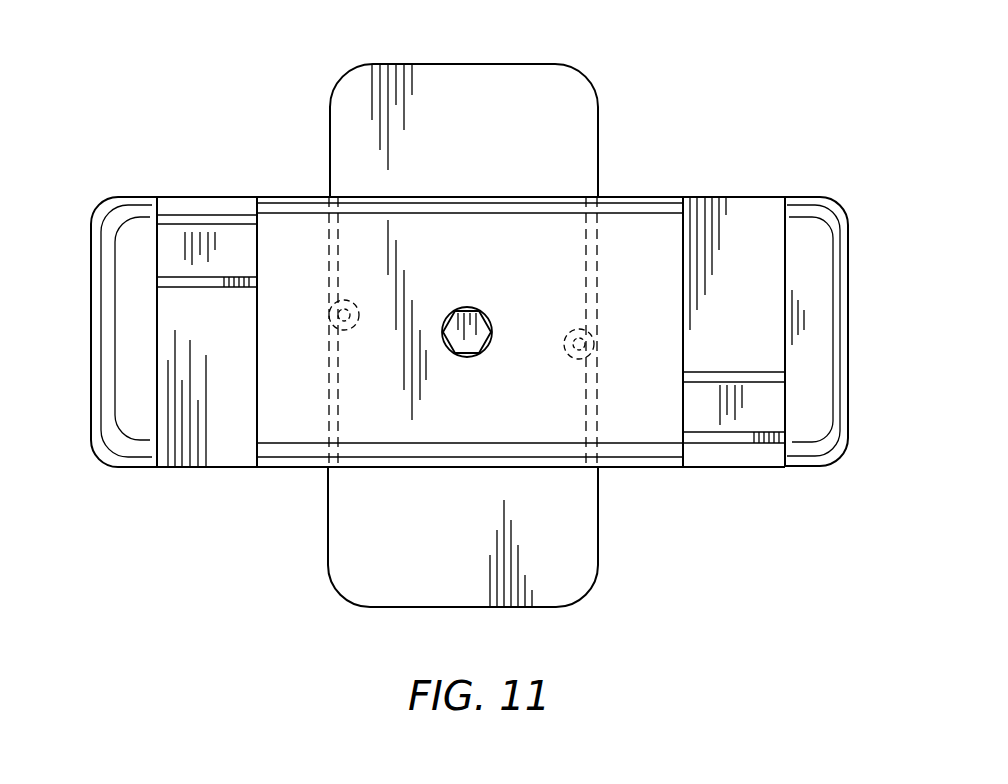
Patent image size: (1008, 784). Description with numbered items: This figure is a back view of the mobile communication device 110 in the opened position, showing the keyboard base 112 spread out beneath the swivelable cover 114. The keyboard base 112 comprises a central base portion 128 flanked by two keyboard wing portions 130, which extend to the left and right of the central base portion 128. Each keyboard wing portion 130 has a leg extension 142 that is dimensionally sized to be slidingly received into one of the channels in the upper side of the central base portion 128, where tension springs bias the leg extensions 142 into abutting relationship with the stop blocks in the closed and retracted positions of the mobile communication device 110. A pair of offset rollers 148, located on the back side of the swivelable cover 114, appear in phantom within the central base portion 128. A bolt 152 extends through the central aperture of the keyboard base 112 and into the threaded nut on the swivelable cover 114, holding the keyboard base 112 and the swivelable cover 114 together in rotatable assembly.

The mobile communication device 110 is at (645, 141).
The keyboard base 112 is at (653, 197).
The swivelable cover 114 is at (473, 63).
The central base portion 128 is at (483, 425).
The keyboard wing portions 130 is at (118, 368).
The leg extensions 142 is at (220, 240).
The offset rollers 148 is at (345, 300).
The bolt 152 is at (472, 342).